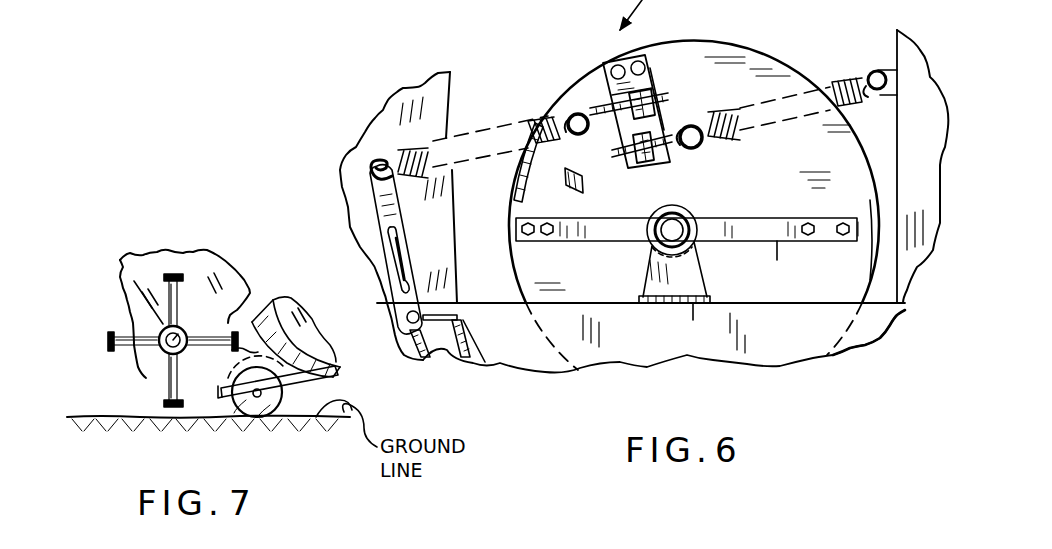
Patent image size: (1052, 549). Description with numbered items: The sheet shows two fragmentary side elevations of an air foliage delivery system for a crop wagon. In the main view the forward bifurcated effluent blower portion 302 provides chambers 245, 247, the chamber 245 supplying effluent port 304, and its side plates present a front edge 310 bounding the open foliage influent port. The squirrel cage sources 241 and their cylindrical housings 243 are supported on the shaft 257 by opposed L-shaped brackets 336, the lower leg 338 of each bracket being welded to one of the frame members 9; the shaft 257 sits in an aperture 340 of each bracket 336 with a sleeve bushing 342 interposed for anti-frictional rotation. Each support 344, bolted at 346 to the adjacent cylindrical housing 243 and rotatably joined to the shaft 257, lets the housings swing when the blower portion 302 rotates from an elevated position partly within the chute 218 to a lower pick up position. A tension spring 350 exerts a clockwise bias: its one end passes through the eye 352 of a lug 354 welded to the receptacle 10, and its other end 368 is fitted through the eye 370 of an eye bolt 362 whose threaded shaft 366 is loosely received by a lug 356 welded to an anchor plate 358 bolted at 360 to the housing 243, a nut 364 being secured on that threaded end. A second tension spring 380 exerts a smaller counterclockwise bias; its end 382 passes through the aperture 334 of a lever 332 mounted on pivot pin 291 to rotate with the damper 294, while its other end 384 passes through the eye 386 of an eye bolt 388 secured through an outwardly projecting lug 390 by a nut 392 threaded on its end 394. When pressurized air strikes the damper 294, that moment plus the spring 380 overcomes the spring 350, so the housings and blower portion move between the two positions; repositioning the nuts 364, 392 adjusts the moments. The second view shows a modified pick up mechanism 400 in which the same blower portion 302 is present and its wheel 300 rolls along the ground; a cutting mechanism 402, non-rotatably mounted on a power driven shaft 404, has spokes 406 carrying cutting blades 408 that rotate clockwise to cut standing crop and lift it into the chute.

In FIG. 6, the chute 218 is at (442, 100).
In FIG. 6, the end of spring 380 382 is at (378, 163).
In FIG. 6, the aperture 334 is at (372, 180).
In FIG. 6, the lever 332 is at (379, 249).
In FIG. 6, the squirrel cage sources 241 is at (513, 182).
In FIG. 6, the damper 294 is at (397, 268).
In FIG. 7, the effluent blower portion 302 is at (280, 312).
In FIG. 6, the effluent blower portion 302 is at (472, 322).
In FIG. 6, the chamber 247 is at (443, 360).
In FIG. 6, the pivot pin 291 is at (404, 321).
In FIG. 6, the tension spring 380 is at (538, 120).
In FIG. 6, the eye bolt 388 is at (585, 105).
In FIG. 6, the eye 386 is at (582, 113).
In FIG. 6, the lug 390 is at (652, 84).
In FIG. 6, the bolts 360 is at (620, 63).
In FIG. 6, the nut 392 is at (655, 88).
In FIG. 6, the threaded end 394 is at (660, 130).
In FIG. 6, the anchor plate 358 is at (675, 142).
In FIG. 6, the end of spring 380 384 is at (596, 130).
In FIG. 6, the threaded shaft 366 is at (608, 164).
In FIG. 6, the nut 364 is at (648, 162).
In FIG. 6, the lug 356 is at (652, 162).
In FIG. 6, the eye bolt 362 is at (665, 152).
In FIG. 6, the end of spring 350 368 is at (722, 142).
In FIG. 6, the eye 370 is at (748, 126).
In FIG. 6, the sleeve bushing 342 is at (690, 224).
In FIG. 6, the shaft 257 is at (698, 227).
In FIG. 6, the L-shaped bracket 336 is at (697, 273).
In FIG. 6, the aperture 340 is at (665, 250).
In FIG. 6, the bolts 346 is at (545, 238).
In FIG. 6, the support 344 is at (778, 260).
In FIG. 6, the lower leg 338 is at (694, 305).
In FIG. 6, the frame member 9 is at (660, 345).
In FIG. 6, the receptacle 10 is at (929, 195).
In FIG. 6, the lug 354 is at (893, 93).
In FIG. 6, the eye 352 is at (887, 67).
In FIG. 6, the tension spring 350 is at (840, 78).
In FIG. 6, the cylindrical housing 243 is at (762, 56).
In FIG. 7, the pick up mechanism 400 is at (161, 325).
In FIG. 7, the spokes 406 is at (140, 330).
In FIG. 7, the cutting blades 408 is at (170, 274).
In FIG. 7, the front edge 310 is at (118, 275).
In FIG. 7, the power driven shaft 404 is at (184, 330).
In FIG. 7, the effluent port 304 is at (270, 298).
In FIG. 7, the cutting mechanism 402 is at (156, 367).
In FIG. 7, the wheel 300 is at (267, 405).
In FIG. 7, the chamber 245 is at (340, 360).